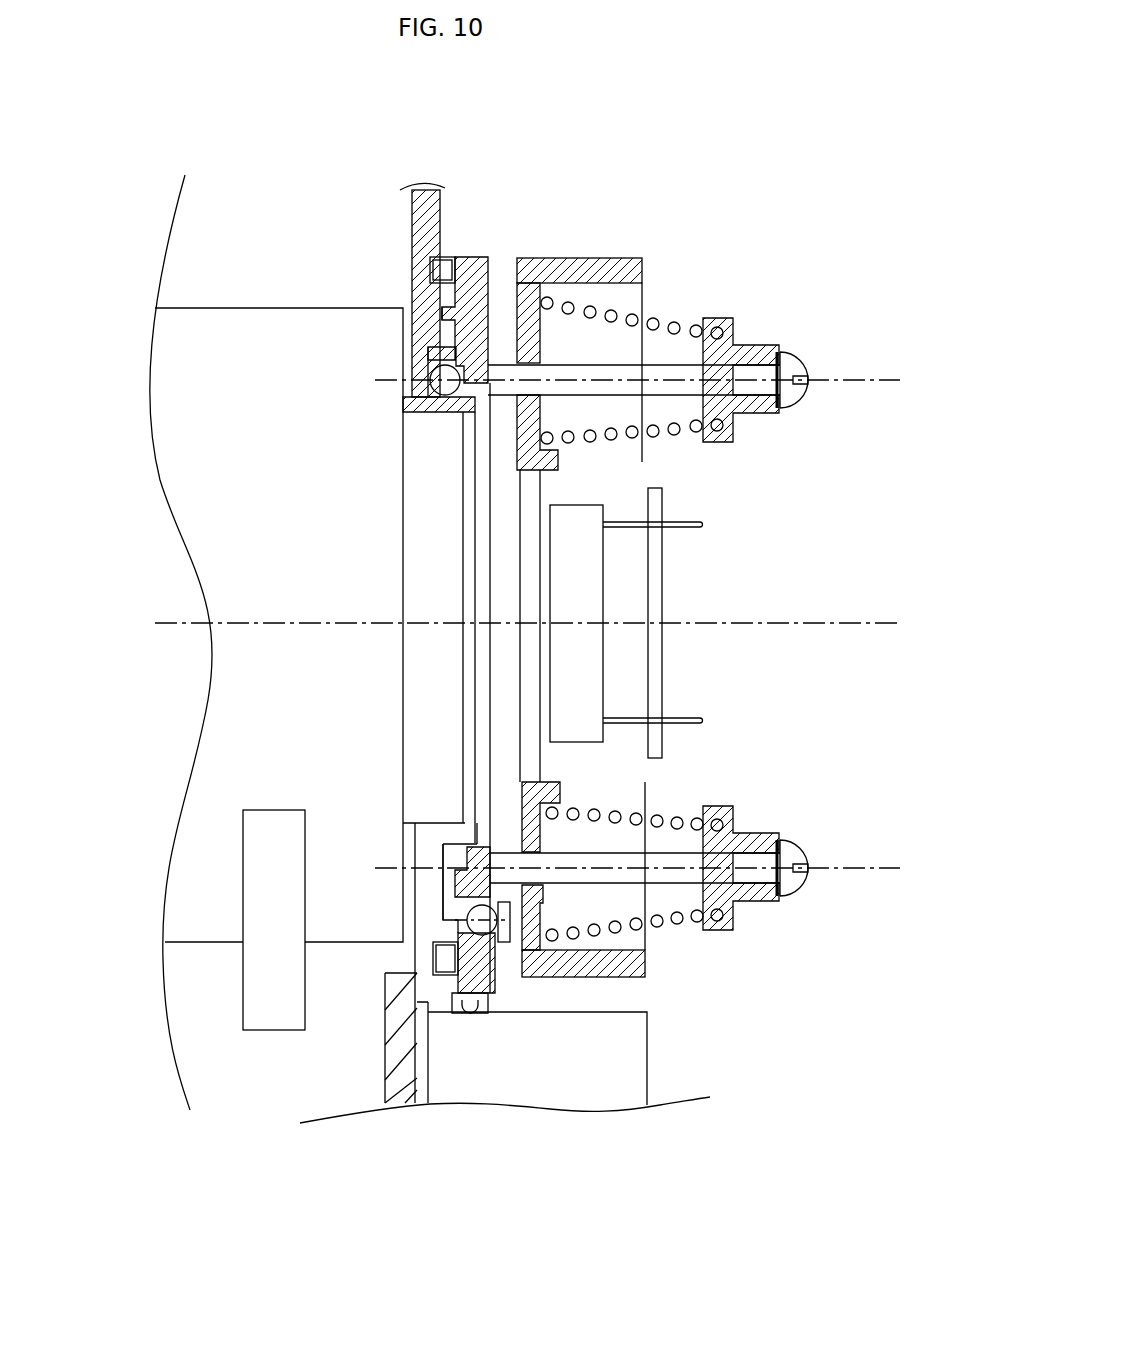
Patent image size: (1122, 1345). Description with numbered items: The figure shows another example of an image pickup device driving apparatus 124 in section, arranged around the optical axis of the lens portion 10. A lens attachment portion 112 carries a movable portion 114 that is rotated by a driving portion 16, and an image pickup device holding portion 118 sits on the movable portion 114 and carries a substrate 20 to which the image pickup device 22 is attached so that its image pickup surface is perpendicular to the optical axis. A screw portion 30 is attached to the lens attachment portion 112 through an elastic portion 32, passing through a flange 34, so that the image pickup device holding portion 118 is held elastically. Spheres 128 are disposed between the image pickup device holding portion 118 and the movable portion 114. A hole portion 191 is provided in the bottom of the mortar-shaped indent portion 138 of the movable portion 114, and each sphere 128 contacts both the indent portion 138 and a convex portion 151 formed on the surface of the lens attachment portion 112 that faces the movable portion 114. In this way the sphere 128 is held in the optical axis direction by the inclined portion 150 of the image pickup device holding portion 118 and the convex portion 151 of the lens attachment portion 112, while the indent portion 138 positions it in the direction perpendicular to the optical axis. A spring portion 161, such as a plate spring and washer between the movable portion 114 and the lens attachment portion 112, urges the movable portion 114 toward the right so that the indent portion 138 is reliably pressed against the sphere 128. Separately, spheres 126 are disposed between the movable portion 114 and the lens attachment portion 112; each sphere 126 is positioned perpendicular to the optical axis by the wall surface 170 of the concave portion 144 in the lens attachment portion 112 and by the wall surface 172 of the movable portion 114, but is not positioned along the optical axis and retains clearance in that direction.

The lens portion 10 is at (203, 307).
The lens attachment portion 112 is at (428, 192).
The movable portion 114 is at (490, 272).
The image pickup device holding portion 118 is at (577, 258).
The spring portion 161 is at (448, 262).
The wall surface 172 is at (433, 358).
The sphere 126 is at (430, 372).
The concave portion 144 is at (416, 399).
The wall surface 170 is at (426, 396).
The flange member 34 is at (733, 325).
The screw portion 30 is at (800, 357).
The elastic portion 32 is at (656, 436).
The substrate 20 is at (662, 590).
The image pickup device 22 is at (603, 698).
The driving portion 16 is at (648, 1050).
The convex portion 151 is at (470, 908).
The hole portion 191 is at (455, 1003).
The indent portion 138 is at (467, 992).
The inclined portion 150 is at (510, 938).
The sphere 128 is at (495, 993).
The image pickup device driving apparatus 124 is at (617, 1133).